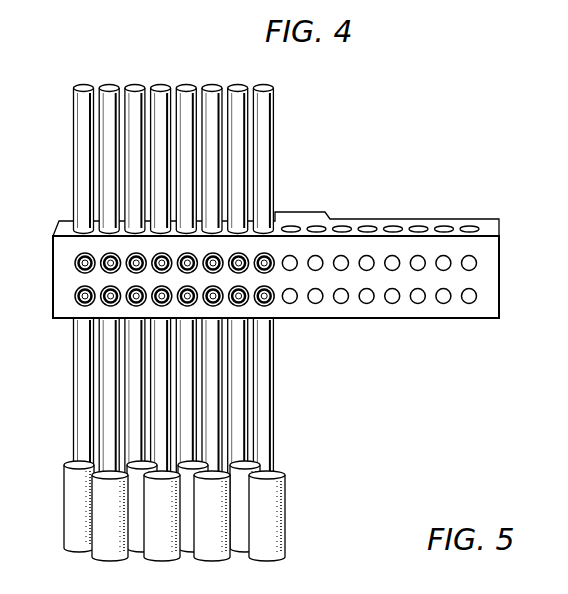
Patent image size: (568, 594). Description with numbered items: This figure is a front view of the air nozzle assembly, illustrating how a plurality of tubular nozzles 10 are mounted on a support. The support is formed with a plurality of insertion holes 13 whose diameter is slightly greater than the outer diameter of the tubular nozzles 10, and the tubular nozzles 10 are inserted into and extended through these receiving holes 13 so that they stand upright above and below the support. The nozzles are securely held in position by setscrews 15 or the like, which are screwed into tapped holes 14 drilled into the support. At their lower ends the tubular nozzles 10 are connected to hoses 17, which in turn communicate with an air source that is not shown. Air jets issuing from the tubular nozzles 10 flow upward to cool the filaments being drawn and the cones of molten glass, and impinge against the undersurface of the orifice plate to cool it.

The tubular nozzles 10 is at (273, 378).
The insertion holes 13 is at (443, 225).
The tapped holes 14 is at (477, 264).
The setscrews 15 is at (75, 297).
The hoses 17 is at (287, 498).